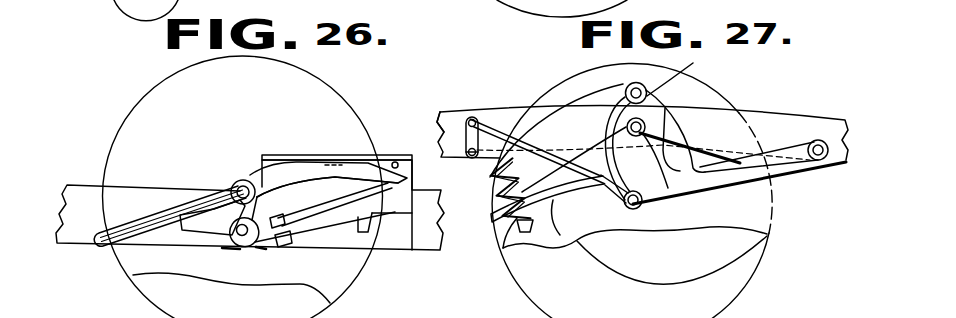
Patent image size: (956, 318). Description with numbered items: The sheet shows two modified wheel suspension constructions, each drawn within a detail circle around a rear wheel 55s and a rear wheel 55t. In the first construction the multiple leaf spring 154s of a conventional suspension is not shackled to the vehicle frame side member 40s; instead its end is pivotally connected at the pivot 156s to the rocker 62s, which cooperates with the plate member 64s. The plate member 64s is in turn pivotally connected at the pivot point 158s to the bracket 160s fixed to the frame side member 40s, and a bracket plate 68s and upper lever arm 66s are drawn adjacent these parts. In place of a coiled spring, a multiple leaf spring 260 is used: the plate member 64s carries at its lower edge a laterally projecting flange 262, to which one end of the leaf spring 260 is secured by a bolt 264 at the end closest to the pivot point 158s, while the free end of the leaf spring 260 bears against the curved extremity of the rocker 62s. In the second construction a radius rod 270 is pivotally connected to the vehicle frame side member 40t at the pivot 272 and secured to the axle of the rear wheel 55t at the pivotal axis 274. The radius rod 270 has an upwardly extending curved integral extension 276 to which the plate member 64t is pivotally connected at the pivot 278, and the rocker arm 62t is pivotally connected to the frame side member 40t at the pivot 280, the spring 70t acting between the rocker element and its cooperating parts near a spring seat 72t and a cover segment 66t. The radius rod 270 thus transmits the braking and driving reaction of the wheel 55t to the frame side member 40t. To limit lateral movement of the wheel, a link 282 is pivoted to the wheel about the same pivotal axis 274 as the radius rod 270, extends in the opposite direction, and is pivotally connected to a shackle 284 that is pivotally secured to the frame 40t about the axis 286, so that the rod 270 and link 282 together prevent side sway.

In FIG. 26, the rear wheel 55s is at (135, 108).
In FIG. 26, the vehicle frame side member 40s is at (410, 250).
In FIG. 26, the bracket plate 68s is at (400, 155).
In FIG. 26, the laterally projecting flange 262 is at (370, 230).
In FIG. 26, the upper lever arm 66s is at (299, 156).
In FIG. 26, the rocker 62s is at (327, 181).
In FIG. 26, the plate member 64s is at (312, 219).
In FIG. 26, the pivot 156s is at (237, 182).
In FIG. 26, the bracket 160s is at (235, 246).
In FIG. 26, the multiple leaf spring 154s is at (183, 213).
In FIG. 26, the pivot point 158s is at (230, 245).
In FIG. 26, the multiple leaf spring 260 is at (292, 246).
In FIG. 26, the bolt 264 is at (279, 280).
In FIG. 27, the rear wheel 55t is at (752, 258).
In FIG. 27, the vehicle frame side member 40t is at (761, 117).
In FIG. 27, the shackle 284 is at (438, 112).
In FIG. 27, the radius rod 270 is at (780, 178).
In FIG. 27, the pivot 278 is at (625, 91).
In FIG. 27, the curved integral extension 276 is at (684, 72).
In FIG. 27, the pivot 280 is at (645, 125).
In FIG. 27, the pivot 272 is at (818, 140).
In FIG. 27, the pivotal axis 274 is at (640, 206).
In FIG. 27, the plate member 64t is at (580, 132).
In FIG. 27, the link 282 is at (497, 120).
In FIG. 27, the axis 286 is at (478, 156).
In FIG. 27, the rocker arm 62t is at (588, 190).
In FIG. 27, the spring 70t is at (495, 189).
In FIG. 27, the spring seat 72t is at (525, 233).
In FIG. 27, the cover segment 66t is at (563, 245).